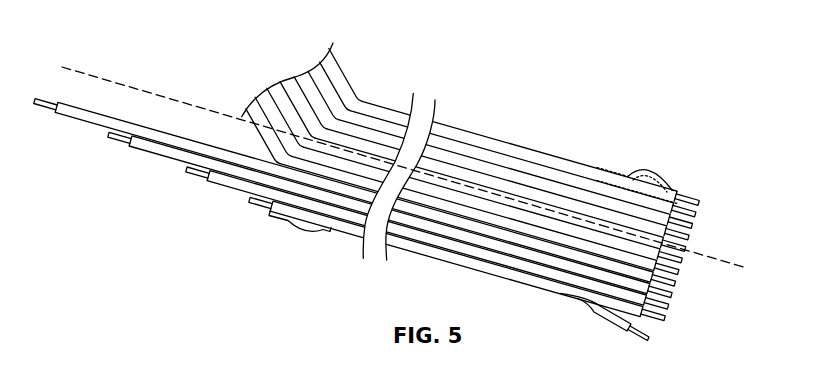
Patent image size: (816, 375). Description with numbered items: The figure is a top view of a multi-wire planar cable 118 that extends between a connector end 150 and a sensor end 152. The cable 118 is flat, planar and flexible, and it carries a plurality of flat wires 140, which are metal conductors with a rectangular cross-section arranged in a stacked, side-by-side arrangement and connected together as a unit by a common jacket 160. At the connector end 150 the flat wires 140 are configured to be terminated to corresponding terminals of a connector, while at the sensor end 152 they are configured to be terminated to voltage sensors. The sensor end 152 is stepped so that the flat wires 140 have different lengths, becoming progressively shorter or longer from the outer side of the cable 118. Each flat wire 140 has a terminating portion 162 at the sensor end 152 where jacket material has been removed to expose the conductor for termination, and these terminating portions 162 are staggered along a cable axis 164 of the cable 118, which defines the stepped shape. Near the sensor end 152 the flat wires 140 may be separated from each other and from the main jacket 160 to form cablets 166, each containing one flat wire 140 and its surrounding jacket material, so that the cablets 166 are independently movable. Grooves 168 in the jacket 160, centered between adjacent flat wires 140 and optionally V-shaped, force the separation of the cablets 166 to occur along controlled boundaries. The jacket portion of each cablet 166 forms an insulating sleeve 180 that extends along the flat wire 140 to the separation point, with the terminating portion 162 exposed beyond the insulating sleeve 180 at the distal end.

The multi-wire planar cable 118 is at (548, 124).
The flat wire 140 is at (622, 176).
The connector end 150 is at (695, 267).
The sensor end 152 is at (118, 57).
The common jacket 160 is at (480, 142).
The terminating portion 162 is at (258, 213).
The cable axis 164 is at (172, 99).
The cablet 166 is at (267, 223).
The groove 168 is at (565, 172).
The insulating sleeve 180 is at (676, 181).